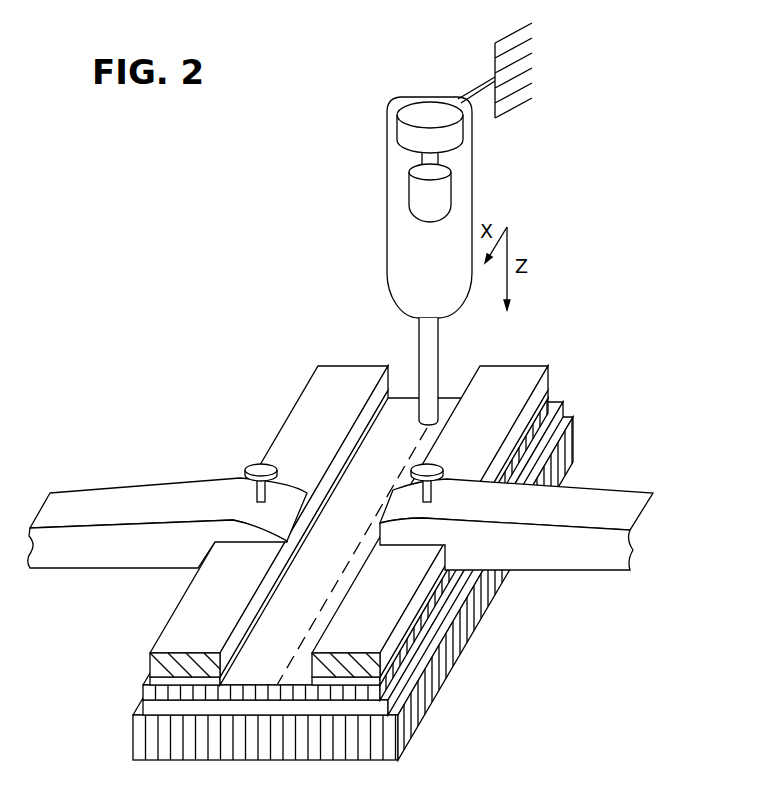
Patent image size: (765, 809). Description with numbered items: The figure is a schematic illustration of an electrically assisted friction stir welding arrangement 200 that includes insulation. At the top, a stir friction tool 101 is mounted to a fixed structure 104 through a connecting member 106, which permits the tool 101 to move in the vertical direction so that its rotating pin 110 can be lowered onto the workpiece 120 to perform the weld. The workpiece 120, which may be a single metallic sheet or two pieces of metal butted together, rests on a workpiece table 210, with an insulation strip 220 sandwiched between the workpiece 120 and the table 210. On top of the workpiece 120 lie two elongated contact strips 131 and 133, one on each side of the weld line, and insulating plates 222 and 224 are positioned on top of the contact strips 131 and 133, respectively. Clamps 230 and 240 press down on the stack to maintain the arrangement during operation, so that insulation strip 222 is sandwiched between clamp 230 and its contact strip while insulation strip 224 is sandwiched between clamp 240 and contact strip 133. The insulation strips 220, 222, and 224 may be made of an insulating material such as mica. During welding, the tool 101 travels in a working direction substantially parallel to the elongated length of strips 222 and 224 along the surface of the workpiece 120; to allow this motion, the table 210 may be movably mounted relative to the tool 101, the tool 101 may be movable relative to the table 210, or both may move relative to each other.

The stir friction tool 101 is at (474, 202).
The fixed structure 104 is at (495, 52).
The connecting member 106 is at (473, 88).
The pin 110 is at (427, 363).
The workpiece 120 is at (240, 693).
The contact strip 131 is at (375, 680).
The contact strip 133 is at (200, 603).
The electrically assisted friction stir welding arrangement 200 is at (645, 223).
The workpiece table 210 is at (363, 750).
The insulation strip 220 is at (270, 708).
The insulation strip 222 is at (377, 645).
The insulation strip 224 is at (216, 645).
The clamp 230 is at (603, 563).
The clamp 240 is at (85, 563).